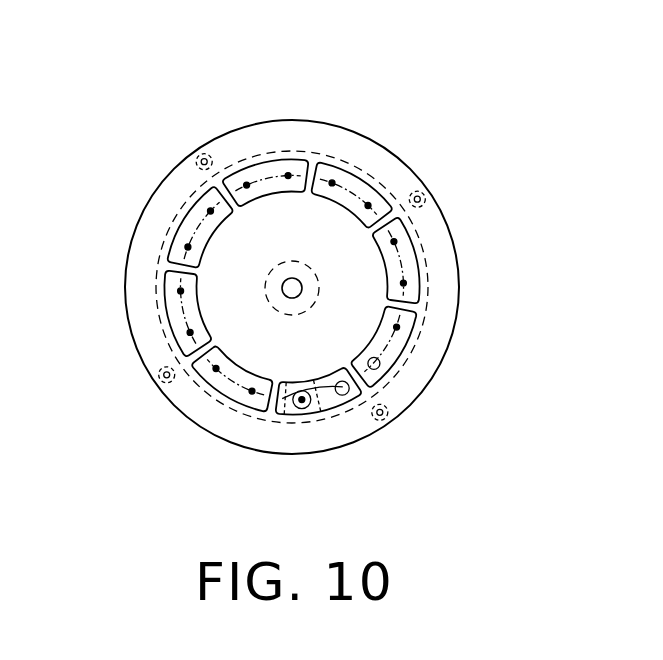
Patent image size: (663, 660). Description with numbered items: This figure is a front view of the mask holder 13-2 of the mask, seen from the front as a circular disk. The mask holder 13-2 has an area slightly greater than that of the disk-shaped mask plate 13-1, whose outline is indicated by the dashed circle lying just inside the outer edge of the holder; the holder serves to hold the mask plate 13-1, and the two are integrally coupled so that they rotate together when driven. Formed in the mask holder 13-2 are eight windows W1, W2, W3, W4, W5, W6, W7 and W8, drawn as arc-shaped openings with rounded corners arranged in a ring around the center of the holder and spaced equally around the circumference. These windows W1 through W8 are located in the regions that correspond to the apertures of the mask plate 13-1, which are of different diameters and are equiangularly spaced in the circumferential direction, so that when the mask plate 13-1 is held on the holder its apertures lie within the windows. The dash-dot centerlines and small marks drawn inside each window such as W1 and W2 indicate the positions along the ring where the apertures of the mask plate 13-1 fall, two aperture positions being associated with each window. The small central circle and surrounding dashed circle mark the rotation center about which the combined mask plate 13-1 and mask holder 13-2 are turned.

The mask holder 13-2 is at (293, 119).
The mask plate 13-1 is at (328, 155).
The window W1 is at (322, 416).
The window W2 is at (405, 350).
The window W3 is at (416, 257).
The window W4 is at (364, 174).
The window W5 is at (262, 158).
The window W6 is at (181, 224).
The window W7 is at (164, 322).
The window W8 is at (229, 401).